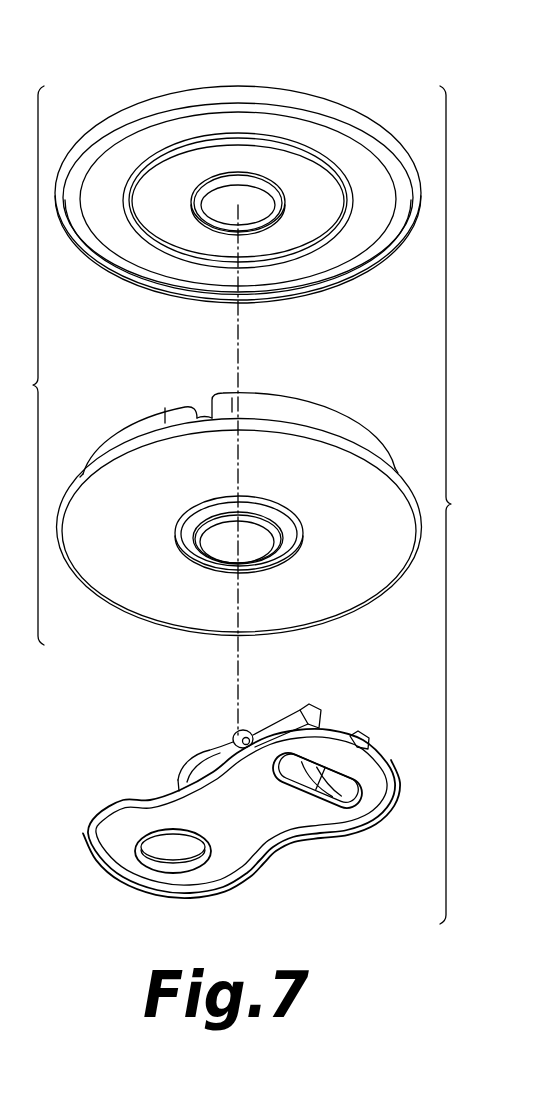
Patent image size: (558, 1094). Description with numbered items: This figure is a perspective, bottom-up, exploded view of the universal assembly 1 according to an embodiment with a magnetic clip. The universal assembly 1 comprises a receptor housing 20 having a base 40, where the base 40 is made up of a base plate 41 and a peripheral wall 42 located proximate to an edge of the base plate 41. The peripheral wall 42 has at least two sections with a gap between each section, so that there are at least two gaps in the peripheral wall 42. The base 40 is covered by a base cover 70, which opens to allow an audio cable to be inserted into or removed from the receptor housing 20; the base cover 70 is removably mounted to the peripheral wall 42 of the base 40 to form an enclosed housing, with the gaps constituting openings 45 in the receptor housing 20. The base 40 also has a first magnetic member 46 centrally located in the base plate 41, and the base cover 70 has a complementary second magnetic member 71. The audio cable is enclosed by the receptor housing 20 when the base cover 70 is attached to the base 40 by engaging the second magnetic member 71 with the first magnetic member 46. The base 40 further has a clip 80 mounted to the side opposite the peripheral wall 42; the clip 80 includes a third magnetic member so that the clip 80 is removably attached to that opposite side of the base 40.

The universal assembly 1 is at (452, 505).
The receptor housing 20 is at (25, 365).
The base cover 70 is at (238, 181).
The second magnetic member 71 is at (258, 212).
The base 40 is at (239, 510).
The base plate 41 is at (133, 613).
The peripheral wall 42 is at (350, 418).
The openings 45 is at (209, 412).
The first magnetic member 46 is at (254, 542).
The clip 80 is at (299, 838).